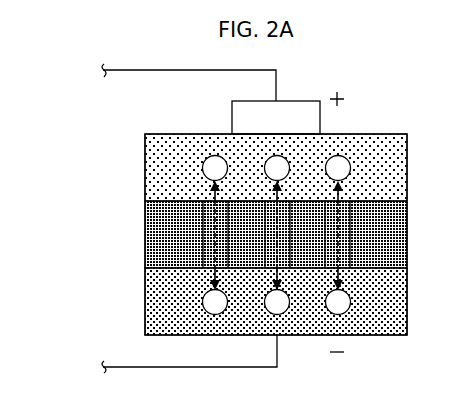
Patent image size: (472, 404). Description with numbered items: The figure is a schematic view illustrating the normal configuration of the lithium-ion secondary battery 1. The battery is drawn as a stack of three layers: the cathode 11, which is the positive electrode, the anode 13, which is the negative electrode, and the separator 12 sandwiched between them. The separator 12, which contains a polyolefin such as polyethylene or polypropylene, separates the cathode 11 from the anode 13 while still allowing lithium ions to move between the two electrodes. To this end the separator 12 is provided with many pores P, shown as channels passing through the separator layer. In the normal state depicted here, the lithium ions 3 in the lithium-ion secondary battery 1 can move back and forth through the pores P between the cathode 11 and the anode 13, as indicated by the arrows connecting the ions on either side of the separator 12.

The lithium-ion secondary battery 1 is at (240, 234).
The cathode 11 is at (148, 170).
The separator 12 is at (148, 236).
The anode 13 is at (255, 301).
The lithium ions 3 is at (219, 161).
The pores P is at (222, 228).